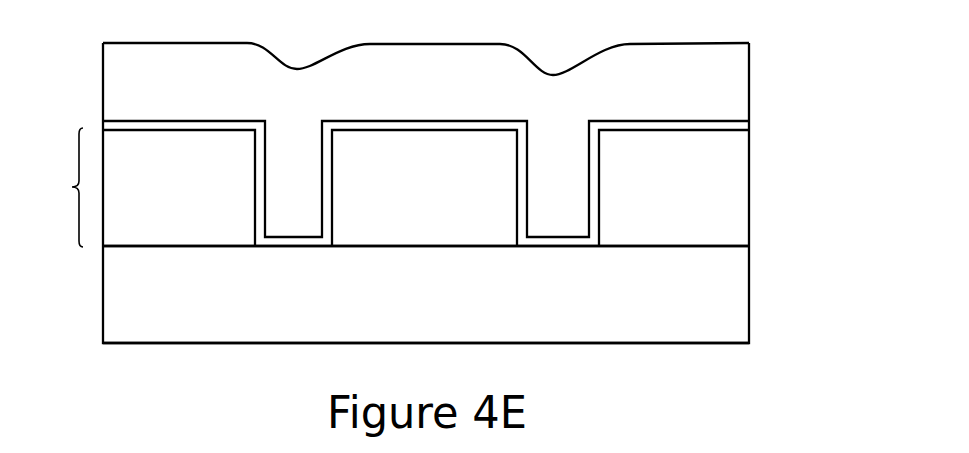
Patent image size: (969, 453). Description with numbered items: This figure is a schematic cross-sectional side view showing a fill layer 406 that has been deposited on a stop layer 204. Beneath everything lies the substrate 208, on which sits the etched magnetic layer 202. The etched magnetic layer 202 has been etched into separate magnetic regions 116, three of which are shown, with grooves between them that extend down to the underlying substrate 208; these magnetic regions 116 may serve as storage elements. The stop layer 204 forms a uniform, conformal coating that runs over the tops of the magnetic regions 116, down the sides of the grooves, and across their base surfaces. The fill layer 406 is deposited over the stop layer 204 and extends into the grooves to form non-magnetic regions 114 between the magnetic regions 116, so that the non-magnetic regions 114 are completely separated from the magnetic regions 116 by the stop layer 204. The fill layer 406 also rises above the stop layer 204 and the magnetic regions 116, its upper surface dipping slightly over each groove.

The fill layer 406 is at (749, 87).
The stop layer 204 is at (749, 125).
The etched magnetic layer 202 is at (54, 187).
The magnetic regions 116 is at (192, 197).
The non-magnetic regions 114 is at (312, 197).
The substrate 208 is at (439, 310).